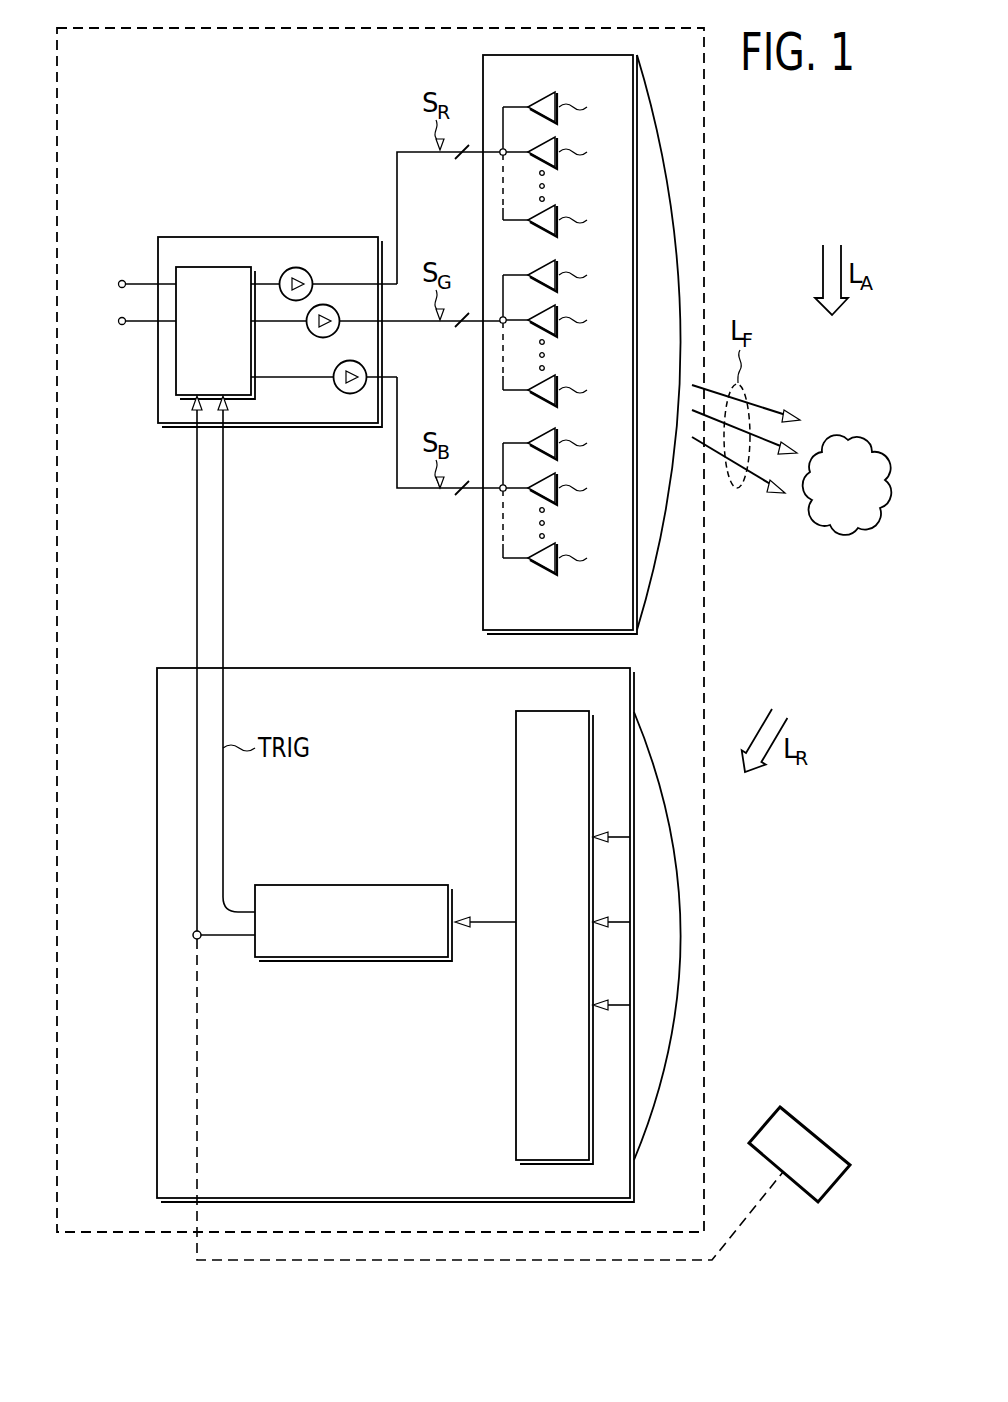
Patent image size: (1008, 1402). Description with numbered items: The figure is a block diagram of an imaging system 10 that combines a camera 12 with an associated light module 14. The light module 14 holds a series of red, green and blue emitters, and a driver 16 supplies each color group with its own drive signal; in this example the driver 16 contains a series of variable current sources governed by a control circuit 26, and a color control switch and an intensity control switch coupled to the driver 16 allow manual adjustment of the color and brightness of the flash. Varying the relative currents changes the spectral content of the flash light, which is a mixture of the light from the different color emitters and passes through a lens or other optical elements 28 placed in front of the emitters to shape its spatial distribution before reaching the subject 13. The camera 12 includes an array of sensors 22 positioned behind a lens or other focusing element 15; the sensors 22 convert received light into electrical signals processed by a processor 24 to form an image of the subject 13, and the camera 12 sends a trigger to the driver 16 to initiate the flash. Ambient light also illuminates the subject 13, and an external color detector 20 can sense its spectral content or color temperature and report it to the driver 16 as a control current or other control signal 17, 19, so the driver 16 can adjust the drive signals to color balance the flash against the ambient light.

The imaging system 10 is at (94, 66).
The camera 12 is at (404, 702).
The subject 13 is at (857, 497).
The light module 14 is at (519, 621).
The focusing element 15 is at (664, 936).
The driver 16 is at (283, 332).
The control signal 17 is at (152, 665).
The control line 19 is at (197, 516).
The color detector 20 is at (810, 1166).
The sensors 22 is at (561, 937).
The processor 24 is at (362, 934).
The control circuit 26 is at (224, 362).
The optical elements 28 is at (667, 354).